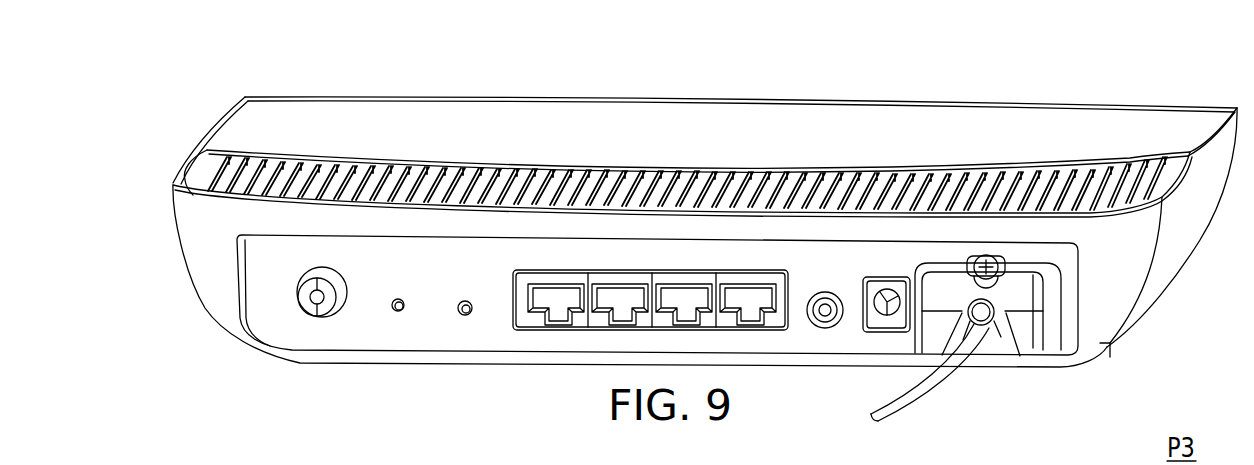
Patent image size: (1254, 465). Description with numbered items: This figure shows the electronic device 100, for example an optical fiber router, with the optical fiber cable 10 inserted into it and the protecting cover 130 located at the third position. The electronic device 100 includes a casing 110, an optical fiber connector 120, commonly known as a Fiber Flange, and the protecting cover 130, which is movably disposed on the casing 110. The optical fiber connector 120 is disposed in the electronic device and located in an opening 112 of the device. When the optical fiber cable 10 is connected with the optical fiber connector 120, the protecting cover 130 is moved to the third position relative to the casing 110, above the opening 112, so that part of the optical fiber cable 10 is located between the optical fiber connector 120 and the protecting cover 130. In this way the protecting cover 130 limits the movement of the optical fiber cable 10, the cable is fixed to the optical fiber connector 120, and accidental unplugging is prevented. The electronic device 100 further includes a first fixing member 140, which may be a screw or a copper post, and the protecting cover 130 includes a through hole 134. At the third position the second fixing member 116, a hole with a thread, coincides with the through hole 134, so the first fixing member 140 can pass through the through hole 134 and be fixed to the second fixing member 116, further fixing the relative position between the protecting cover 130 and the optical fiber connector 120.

The electronic device 100 is at (261, 71).
The casing 110 is at (1123, 282).
The opening 112 is at (657, 350).
The second fixing member 116 is at (990, 256).
The optical fiber connector 120 is at (1001, 323).
The protecting cover 130 is at (1030, 337).
The through hole 134 is at (1003, 262).
The first fixing member 140 is at (993, 276).
The optical fiber cable 10 is at (908, 388).